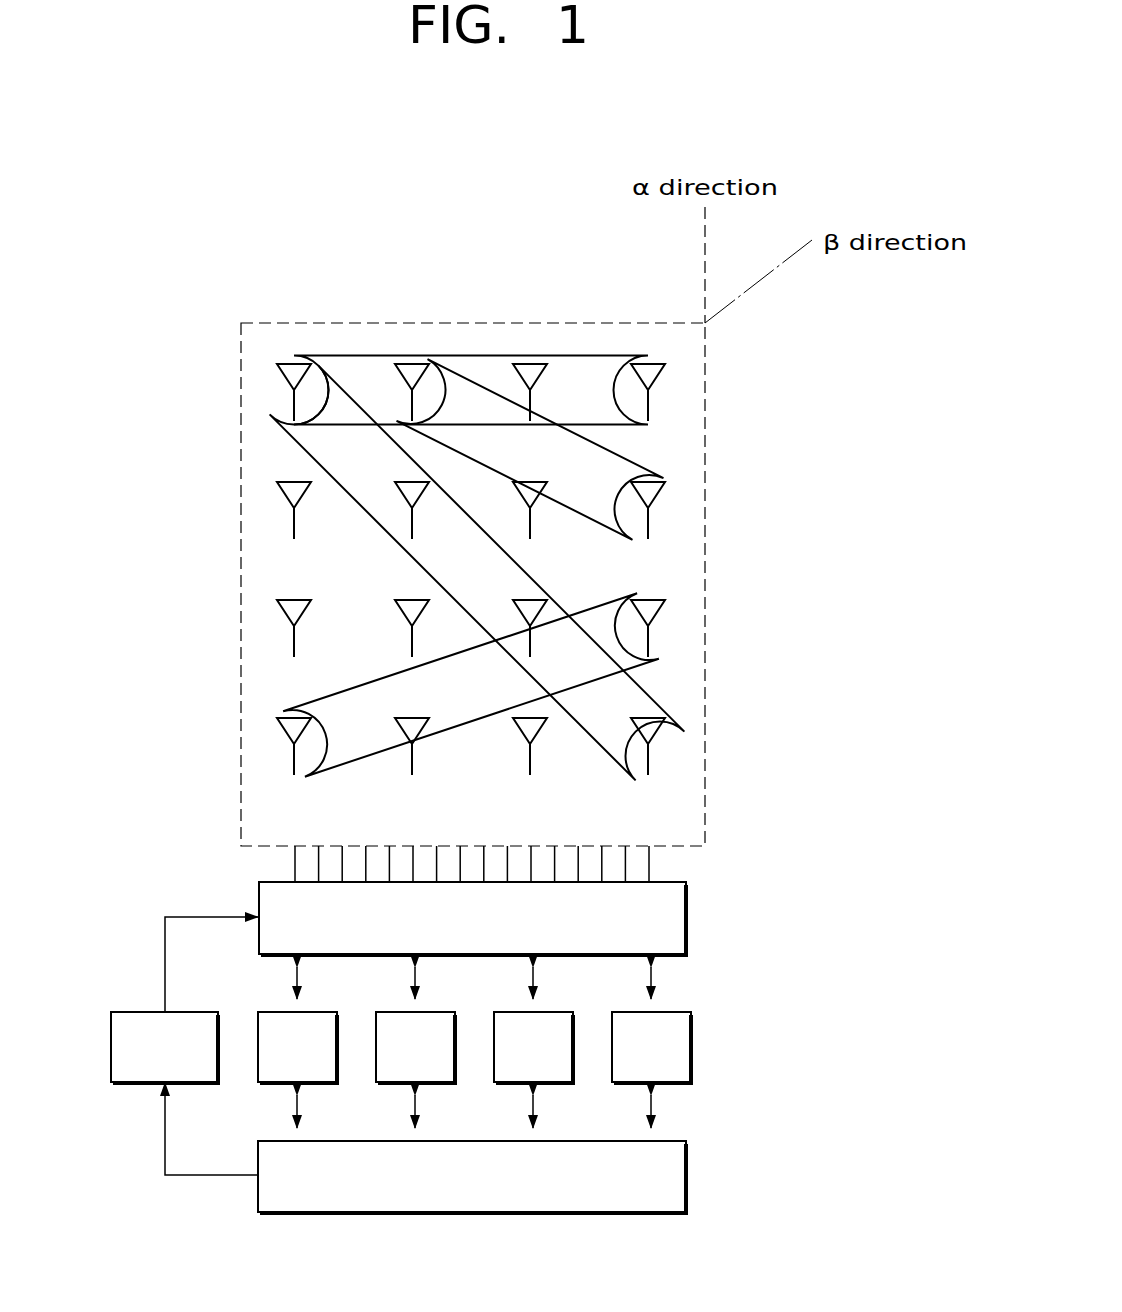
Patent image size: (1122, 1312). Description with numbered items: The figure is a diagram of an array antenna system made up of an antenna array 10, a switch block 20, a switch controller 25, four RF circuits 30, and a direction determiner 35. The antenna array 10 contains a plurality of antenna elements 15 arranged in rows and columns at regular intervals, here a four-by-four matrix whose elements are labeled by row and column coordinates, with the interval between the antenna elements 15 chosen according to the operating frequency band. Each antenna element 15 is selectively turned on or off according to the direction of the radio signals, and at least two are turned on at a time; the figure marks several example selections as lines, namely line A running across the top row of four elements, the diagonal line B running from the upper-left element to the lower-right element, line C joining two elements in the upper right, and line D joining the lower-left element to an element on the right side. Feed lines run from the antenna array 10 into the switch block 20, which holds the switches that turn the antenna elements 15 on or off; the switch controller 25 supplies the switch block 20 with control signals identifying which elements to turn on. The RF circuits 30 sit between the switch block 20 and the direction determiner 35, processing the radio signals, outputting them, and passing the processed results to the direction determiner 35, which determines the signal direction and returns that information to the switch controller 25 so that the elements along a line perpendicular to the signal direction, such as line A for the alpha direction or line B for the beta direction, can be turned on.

The antenna array 10 is at (484, 561).
The antenna elements 15 is at (683, 361).
The switch block 20 is at (688, 917).
The switch controller 25 is at (111, 1049).
The RF circuit 30 is at (692, 1048).
The direction determiner 35 is at (688, 1177).
The line A is at (343, 356).
The line B is at (695, 769).
The line C is at (679, 529).
The line D is at (259, 748).